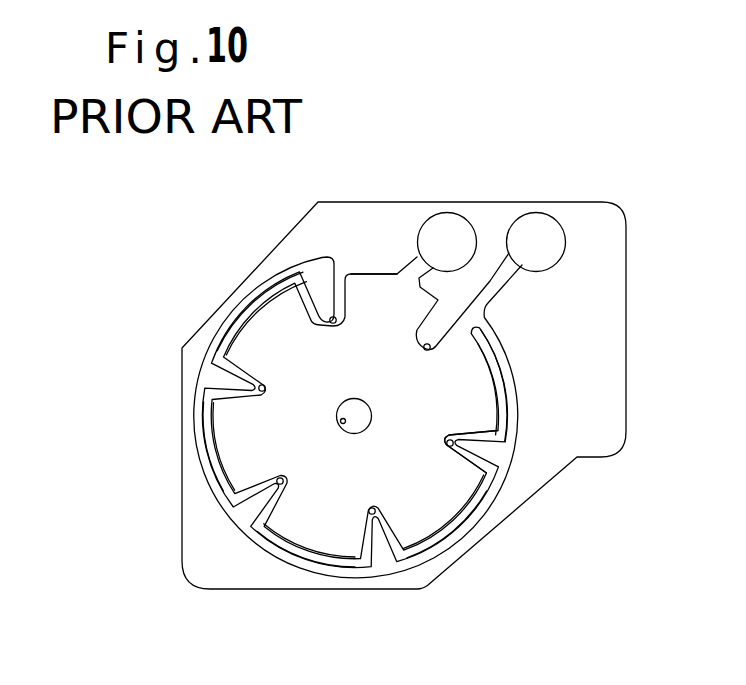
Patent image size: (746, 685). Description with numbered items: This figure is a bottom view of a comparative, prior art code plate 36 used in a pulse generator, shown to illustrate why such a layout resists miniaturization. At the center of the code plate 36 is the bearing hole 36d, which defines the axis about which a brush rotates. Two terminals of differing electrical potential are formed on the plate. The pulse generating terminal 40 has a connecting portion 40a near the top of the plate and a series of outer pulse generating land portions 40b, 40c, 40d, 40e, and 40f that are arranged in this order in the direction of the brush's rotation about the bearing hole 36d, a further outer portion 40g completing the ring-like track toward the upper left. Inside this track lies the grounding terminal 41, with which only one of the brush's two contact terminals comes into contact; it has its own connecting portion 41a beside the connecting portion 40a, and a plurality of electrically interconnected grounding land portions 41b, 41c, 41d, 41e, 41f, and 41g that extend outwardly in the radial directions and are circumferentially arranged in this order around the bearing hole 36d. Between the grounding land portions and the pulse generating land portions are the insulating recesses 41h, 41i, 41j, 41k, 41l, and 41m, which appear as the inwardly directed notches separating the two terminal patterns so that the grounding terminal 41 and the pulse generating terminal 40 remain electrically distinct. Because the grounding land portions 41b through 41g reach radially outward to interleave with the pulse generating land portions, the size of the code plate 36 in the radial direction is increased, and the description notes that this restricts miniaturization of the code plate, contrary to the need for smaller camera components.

The code plate 36 is at (611, 205).
The bearing hole 36d is at (341, 421).
The pulse generating terminal 40 is at (485, 457).
The connecting portion 40a is at (537, 235).
The pulse generating land portion 40b is at (457, 322).
The pulse generating land portion 40c is at (475, 445).
The pulse generating land portion 40d is at (397, 543).
The pulse generating land portion 40e is at (272, 470).
The pulse generating land portion 40f is at (238, 386).
The segment of first pattern 40g is at (312, 273).
The grounding terminal 41 is at (444, 496).
The connecting portion 41a is at (442, 237).
The grounding land portion 41b is at (377, 281).
The grounding land portion 41c is at (477, 377).
The grounding land portion 41d is at (433, 523).
The grounding land portion 41e is at (313, 547).
The grounding land portion 41f is at (237, 453).
The grounding land portion 41g is at (270, 333).
The insulating recess 41h is at (430, 351).
The insulating recess 41i is at (448, 442).
The insulating recess 41j is at (373, 509).
The insulating recess 41k is at (283, 484).
The insulating recess 41l is at (265, 391).
The insulating recess 41m is at (338, 323).